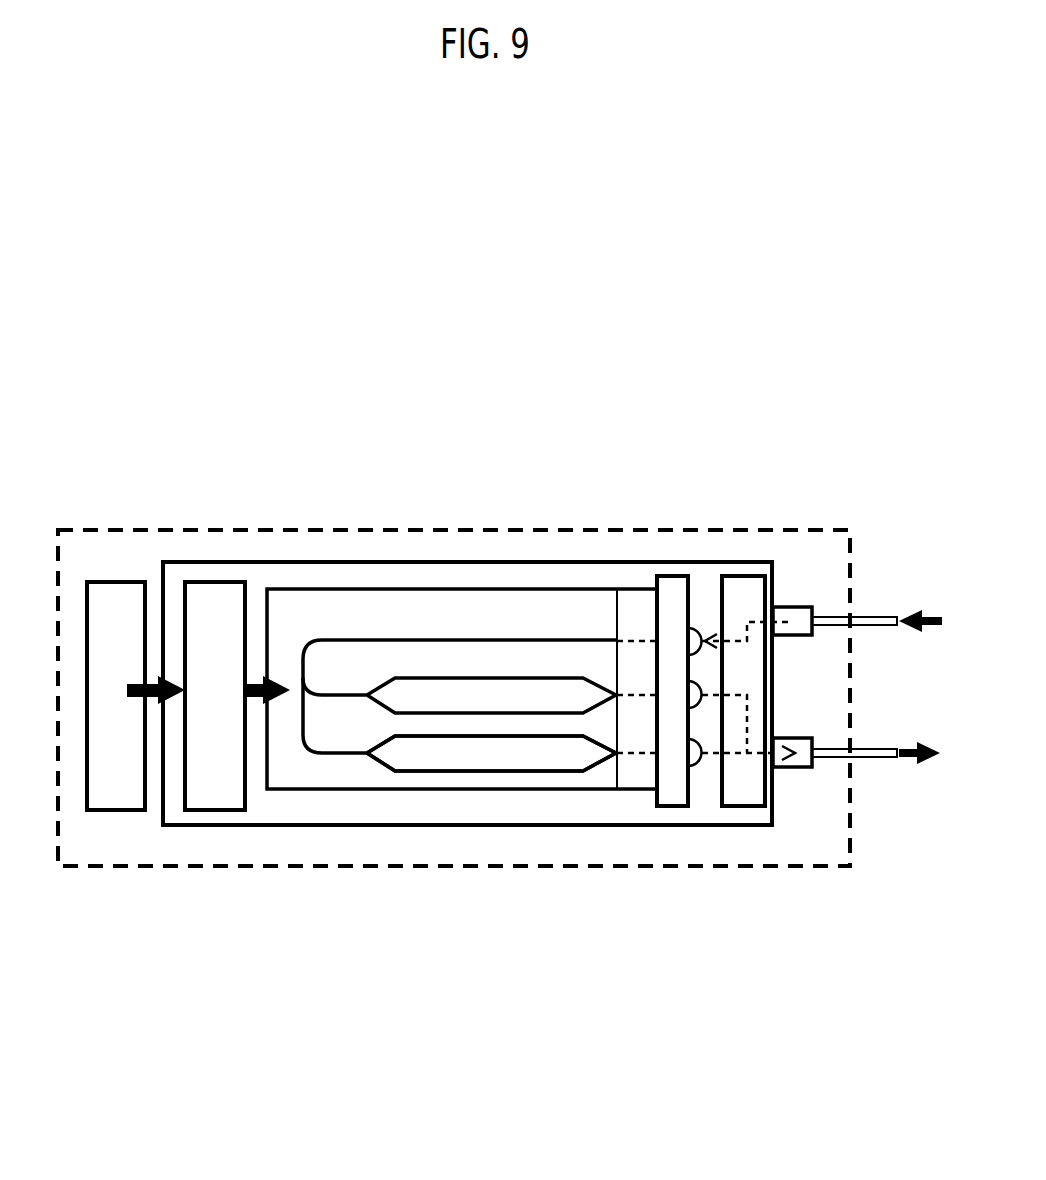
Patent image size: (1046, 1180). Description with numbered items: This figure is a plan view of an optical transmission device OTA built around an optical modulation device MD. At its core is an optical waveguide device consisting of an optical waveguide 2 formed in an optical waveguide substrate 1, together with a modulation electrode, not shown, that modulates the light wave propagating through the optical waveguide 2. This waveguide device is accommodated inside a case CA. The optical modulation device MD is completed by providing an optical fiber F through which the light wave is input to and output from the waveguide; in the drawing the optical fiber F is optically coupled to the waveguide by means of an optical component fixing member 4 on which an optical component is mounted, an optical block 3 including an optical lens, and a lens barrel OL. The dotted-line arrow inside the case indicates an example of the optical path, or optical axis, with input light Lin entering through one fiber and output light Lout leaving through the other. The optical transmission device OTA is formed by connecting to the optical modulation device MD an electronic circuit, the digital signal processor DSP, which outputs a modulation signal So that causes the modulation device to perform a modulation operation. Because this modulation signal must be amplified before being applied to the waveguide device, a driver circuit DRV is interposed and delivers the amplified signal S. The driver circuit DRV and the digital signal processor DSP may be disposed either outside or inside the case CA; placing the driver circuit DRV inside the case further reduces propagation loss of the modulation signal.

The optical transmission device OTA is at (218, 868).
The optical modulation device MD is at (420, 826).
The digital signal processor DSP is at (108, 582).
The driver circuit DRV is at (212, 582).
The input signal So is at (146, 679).
The drive signal S is at (267, 679).
The case CA is at (505, 562).
The optical waveguide substrate 1 is at (422, 620).
The optical waveguide 2 is at (540, 772).
The optical block 3 is at (673, 605).
The optical component fixing member 4 is at (743, 608).
The lens barrel OL is at (797, 606).
The optical fiber F is at (862, 636).
The input light Lin is at (920, 604).
The output light Lout is at (916, 772).